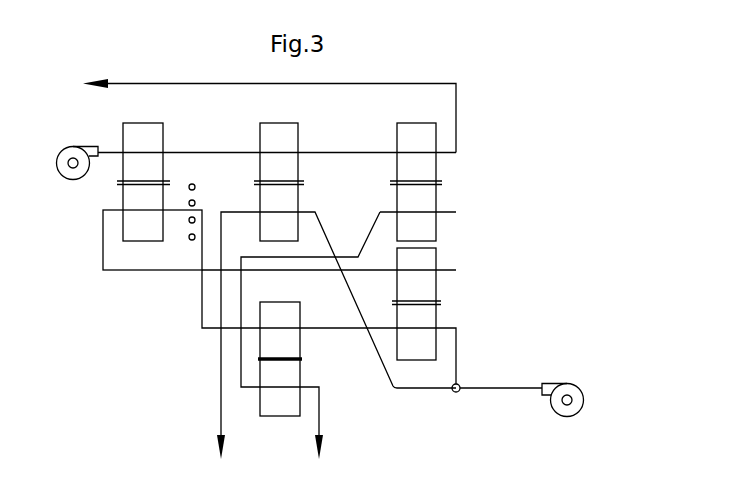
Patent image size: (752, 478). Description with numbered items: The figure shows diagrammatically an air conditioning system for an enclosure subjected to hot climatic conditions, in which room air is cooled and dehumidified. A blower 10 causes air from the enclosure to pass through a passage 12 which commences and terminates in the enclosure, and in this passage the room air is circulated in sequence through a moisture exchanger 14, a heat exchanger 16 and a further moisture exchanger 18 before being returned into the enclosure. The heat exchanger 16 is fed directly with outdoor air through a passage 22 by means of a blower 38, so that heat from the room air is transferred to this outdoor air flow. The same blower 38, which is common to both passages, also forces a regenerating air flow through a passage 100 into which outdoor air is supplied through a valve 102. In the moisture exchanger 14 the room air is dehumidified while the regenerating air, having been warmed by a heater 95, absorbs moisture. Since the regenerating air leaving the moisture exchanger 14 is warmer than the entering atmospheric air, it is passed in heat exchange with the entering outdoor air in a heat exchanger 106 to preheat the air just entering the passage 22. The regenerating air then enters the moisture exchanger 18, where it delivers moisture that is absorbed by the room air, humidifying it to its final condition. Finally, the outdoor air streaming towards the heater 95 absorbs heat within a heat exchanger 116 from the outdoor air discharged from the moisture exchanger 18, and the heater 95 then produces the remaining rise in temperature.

The blower 10 is at (61, 170).
The passage 12 is at (409, 84).
The moisture exchanger 14 is at (148, 135).
The heat exchanger 16 is at (287, 135).
The moisture exchanger 18 is at (428, 138).
The passage 22 is at (322, 222).
The blower 38 is at (573, 393).
The heater 95 is at (189, 240).
The passage 100 is at (200, 302).
The valve 102 is at (452, 392).
The heat exchanger 106 is at (425, 318).
The heat exchanger 116 is at (270, 408).